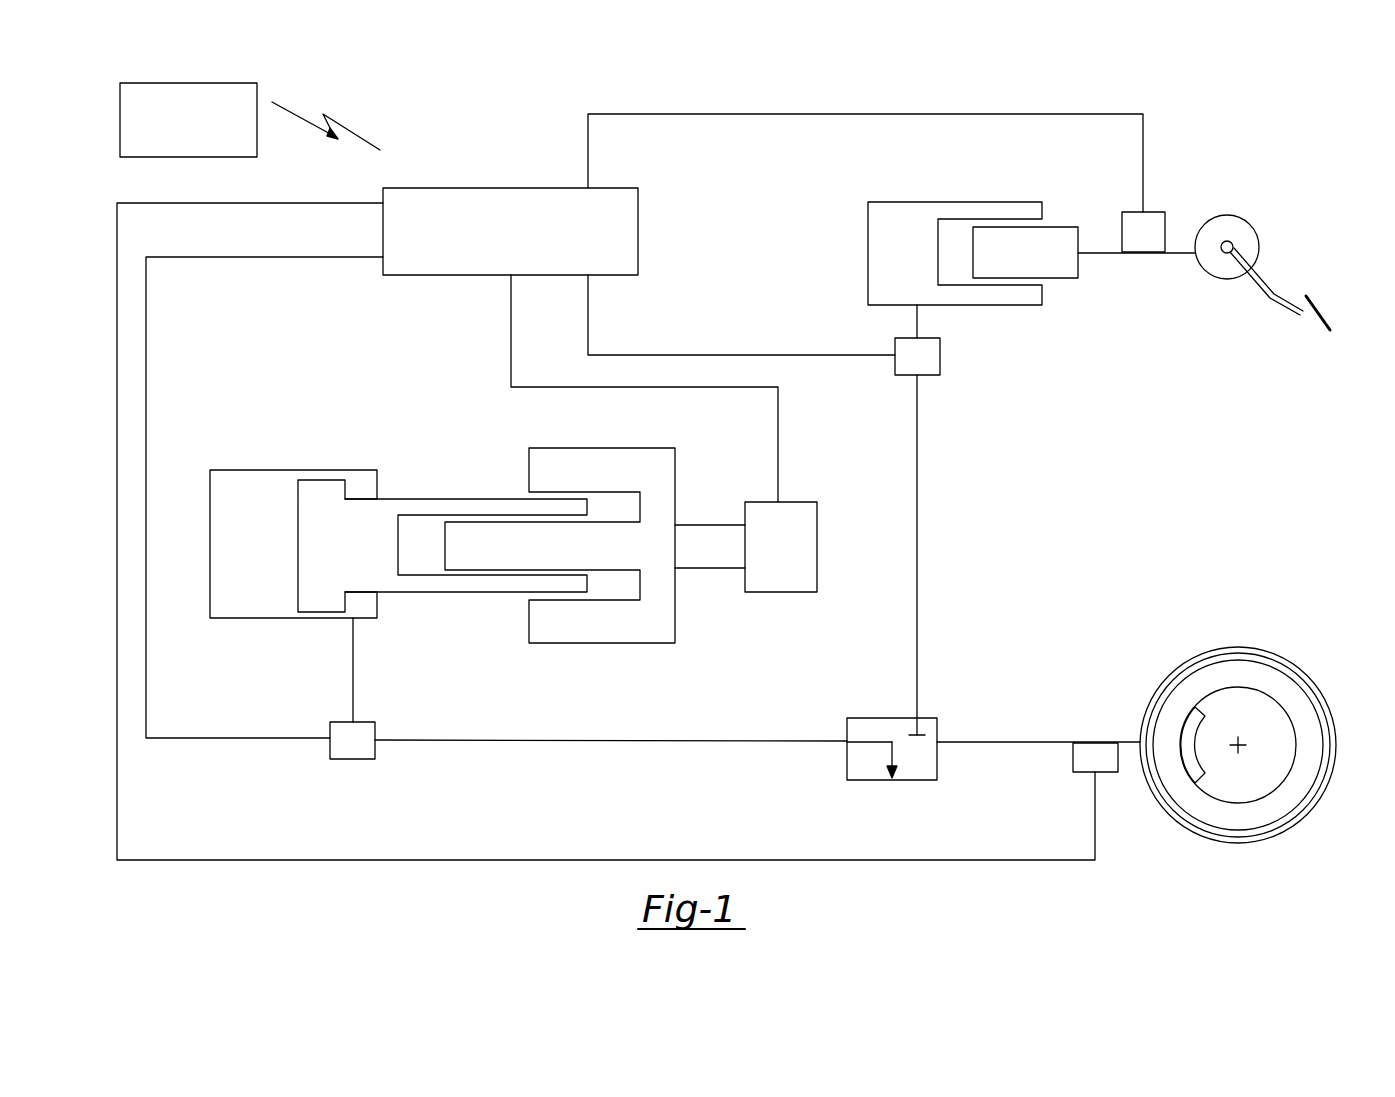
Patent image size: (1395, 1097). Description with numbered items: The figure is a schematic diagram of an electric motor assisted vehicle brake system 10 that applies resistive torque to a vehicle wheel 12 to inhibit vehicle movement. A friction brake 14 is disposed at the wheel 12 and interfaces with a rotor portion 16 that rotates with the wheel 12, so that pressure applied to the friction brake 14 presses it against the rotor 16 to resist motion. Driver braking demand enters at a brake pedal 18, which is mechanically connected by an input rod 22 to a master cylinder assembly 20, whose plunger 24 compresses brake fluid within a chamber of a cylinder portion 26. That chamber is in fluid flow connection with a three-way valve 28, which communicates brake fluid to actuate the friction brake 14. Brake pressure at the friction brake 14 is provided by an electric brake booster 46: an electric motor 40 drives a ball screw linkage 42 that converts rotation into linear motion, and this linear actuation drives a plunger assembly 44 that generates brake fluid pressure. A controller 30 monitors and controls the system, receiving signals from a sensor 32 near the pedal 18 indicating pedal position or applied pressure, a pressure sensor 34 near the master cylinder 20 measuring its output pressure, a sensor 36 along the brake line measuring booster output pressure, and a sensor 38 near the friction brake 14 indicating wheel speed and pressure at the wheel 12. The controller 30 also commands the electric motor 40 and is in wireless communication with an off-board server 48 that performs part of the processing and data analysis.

The vehicle brake system 10 is at (1093, 447).
The vehicle wheel 12 is at (1318, 690).
The friction brake 14 is at (1178, 742).
The rotor portion 16 is at (1277, 782).
The brake pedal 18 is at (1262, 283).
The master cylinder assembly 20 is at (880, 192).
The input rod 22 is at (1108, 258).
The plunger 24 is at (1060, 282).
The cylinder portion 26 is at (955, 202).
The three-way valve 28 is at (847, 763).
The controller 30 is at (508, 188).
The sensor 32 is at (1150, 212).
The pressure sensor 34 is at (942, 357).
The sensor 36 is at (352, 759).
The sensor 38 is at (1073, 758).
The electric motor 40 is at (817, 548).
The ball screw linkage 42 is at (710, 568).
The plunger assembly 44 is at (465, 499).
The electric brake booster 46 is at (297, 436).
The off-board server 48 is at (120, 123).